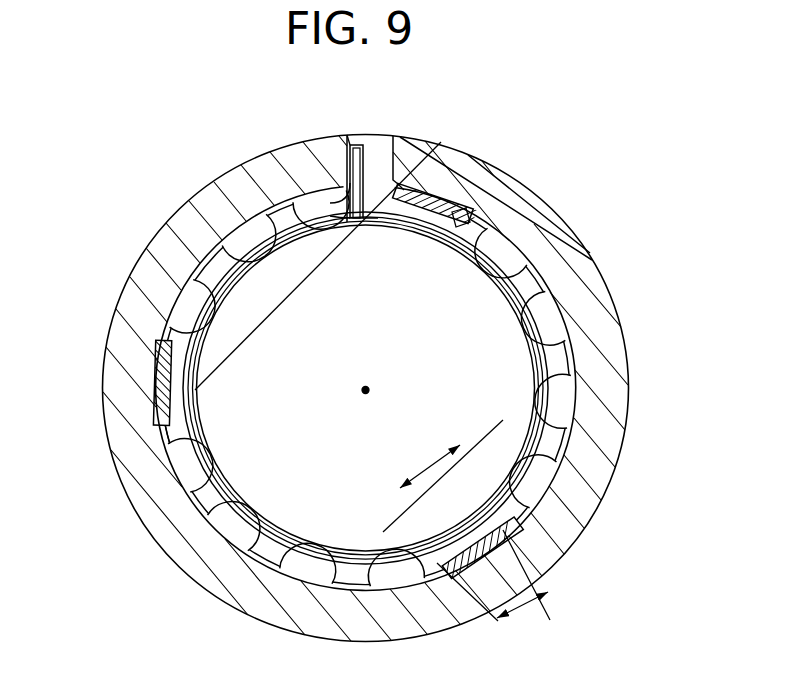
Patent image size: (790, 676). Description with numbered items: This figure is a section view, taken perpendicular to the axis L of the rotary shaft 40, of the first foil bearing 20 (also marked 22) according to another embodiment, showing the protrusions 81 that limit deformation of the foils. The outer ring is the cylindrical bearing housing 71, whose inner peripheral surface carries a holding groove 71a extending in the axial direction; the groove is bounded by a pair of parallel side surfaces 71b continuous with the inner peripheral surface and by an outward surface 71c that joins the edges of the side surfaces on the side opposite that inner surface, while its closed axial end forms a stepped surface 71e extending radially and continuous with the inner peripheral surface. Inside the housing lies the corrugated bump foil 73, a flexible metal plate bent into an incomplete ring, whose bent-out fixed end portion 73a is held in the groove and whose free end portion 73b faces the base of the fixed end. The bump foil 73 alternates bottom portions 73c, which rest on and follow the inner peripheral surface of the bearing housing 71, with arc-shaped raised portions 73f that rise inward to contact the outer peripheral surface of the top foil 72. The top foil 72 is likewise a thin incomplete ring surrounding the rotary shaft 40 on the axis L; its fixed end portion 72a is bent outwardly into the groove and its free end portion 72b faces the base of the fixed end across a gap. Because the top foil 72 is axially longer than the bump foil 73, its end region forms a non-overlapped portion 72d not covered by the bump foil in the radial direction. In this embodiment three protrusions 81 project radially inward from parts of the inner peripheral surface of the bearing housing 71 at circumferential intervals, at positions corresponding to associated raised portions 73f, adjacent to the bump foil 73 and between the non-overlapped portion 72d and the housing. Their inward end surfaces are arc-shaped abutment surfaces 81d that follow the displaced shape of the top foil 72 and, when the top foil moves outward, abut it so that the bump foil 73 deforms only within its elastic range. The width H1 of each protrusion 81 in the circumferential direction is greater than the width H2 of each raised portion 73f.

The first foil bearing 20 is at (195, 182).
The stator holder 22 is at (369, 360).
The rotary shaft 40 is at (594, 437).
The bearing housing 71 is at (548, 228).
The holding groove 71a is at (450, 195).
The side surfaces 71b is at (343, 178).
The outward surface 71c is at (366, 145).
The stepped surface 71e is at (392, 165).
The top foil 72 is at (202, 252).
The fixed end portion 72a is at (333, 178).
The free end portion 72b is at (380, 235).
The non-overlapped portion 72d is at (172, 325).
The bump foil 73 is at (158, 418).
The fixed end portion 73a is at (356, 148).
The free end portion 73b is at (470, 208).
The bottom portions 73c is at (520, 255).
The raised portions 73f is at (525, 318).
The protrusions 81 is at (177, 394).
The abutment surfaces 81d is at (197, 372).
The axis L is at (368, 395).
The width of each protrusion H1 is at (412, 470).
The width of each raised portion H2 is at (506, 585).